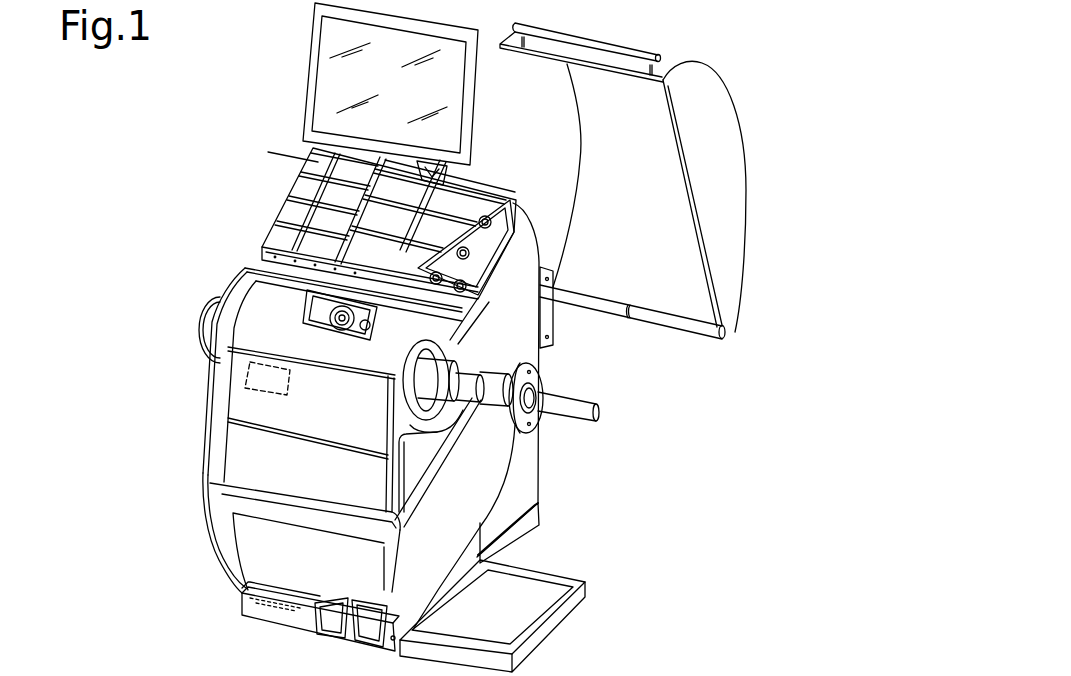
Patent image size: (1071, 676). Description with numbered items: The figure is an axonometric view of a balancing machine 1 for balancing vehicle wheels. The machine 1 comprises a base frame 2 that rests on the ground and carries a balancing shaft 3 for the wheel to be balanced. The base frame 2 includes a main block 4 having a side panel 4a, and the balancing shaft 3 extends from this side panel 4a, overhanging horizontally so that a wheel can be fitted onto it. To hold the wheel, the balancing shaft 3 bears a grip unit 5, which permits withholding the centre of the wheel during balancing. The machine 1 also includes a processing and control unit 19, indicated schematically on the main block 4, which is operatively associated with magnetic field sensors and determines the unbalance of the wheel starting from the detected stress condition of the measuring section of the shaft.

The balancing machine 1 is at (126, 208).
The base frame 2 is at (196, 530).
The balancing shaft 3 is at (482, 411).
The main block 4 is at (244, 442).
The side panel 4a is at (437, 537).
The grip unit 5 is at (542, 382).
The processing and control unit 19 is at (245, 383).